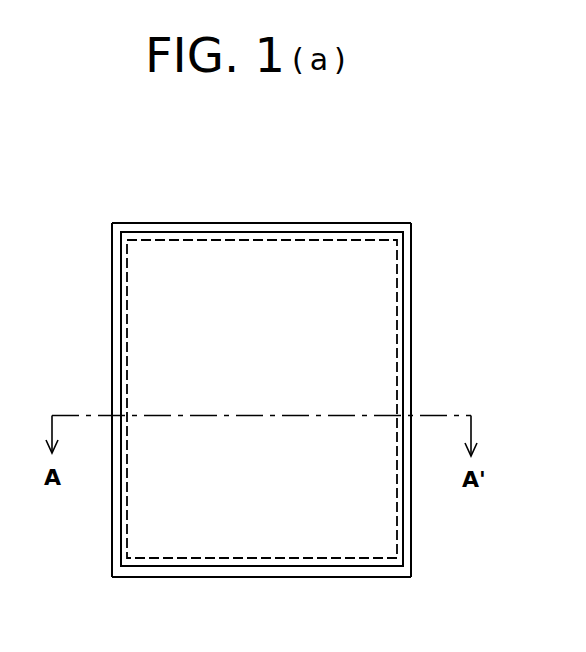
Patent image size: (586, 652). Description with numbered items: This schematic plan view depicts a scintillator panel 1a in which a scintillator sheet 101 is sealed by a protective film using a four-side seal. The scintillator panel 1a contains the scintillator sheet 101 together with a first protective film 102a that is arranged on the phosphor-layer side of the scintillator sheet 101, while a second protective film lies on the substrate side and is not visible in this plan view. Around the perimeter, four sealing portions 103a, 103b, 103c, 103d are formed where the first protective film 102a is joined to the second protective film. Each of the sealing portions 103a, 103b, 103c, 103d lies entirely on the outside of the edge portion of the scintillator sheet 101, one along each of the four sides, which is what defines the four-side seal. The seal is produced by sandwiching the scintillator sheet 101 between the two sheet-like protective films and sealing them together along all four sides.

The scintillator panel 1a is at (388, 207).
The scintillator sheet 101 is at (152, 495).
The first protective film 102a is at (168, 342).
The sealing portion 103a is at (145, 228).
The sealing portion 103b is at (411, 342).
The sealing portion 103c is at (177, 570).
The sealing portion 103d is at (112, 388).